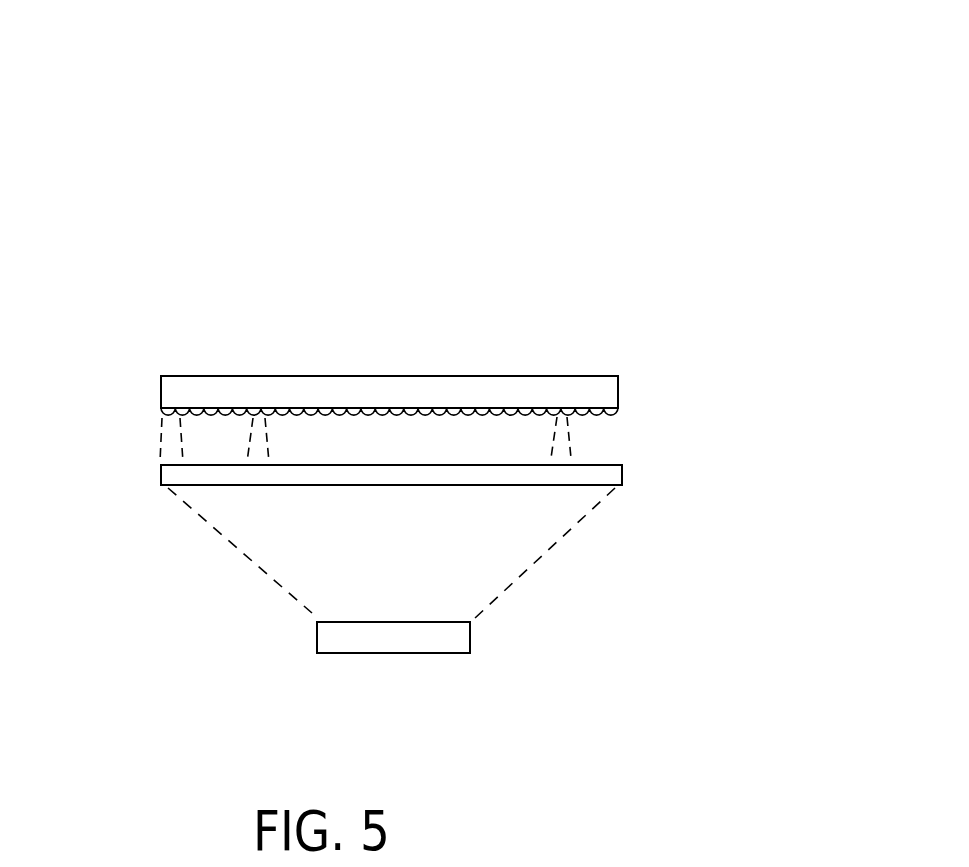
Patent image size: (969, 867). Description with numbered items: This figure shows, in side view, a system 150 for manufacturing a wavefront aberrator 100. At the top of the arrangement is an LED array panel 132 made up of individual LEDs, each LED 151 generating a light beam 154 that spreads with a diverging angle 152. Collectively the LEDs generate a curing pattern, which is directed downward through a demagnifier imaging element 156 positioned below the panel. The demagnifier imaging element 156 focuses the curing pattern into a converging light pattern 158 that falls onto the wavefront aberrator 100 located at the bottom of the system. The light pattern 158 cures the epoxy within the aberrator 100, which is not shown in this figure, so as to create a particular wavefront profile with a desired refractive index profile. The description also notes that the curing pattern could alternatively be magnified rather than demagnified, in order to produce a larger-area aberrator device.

The system for manufacturing the wavefront aberrator 150 is at (762, 115).
The LED array panel 132 is at (595, 388).
The LED 151 is at (158, 418).
The diverging angle 152 is at (193, 443).
The light beam 154 is at (148, 458).
The demagnifier imaging element 156 is at (613, 472).
The light pattern 158 is at (550, 552).
The wavefront aberrator 100 is at (307, 653).